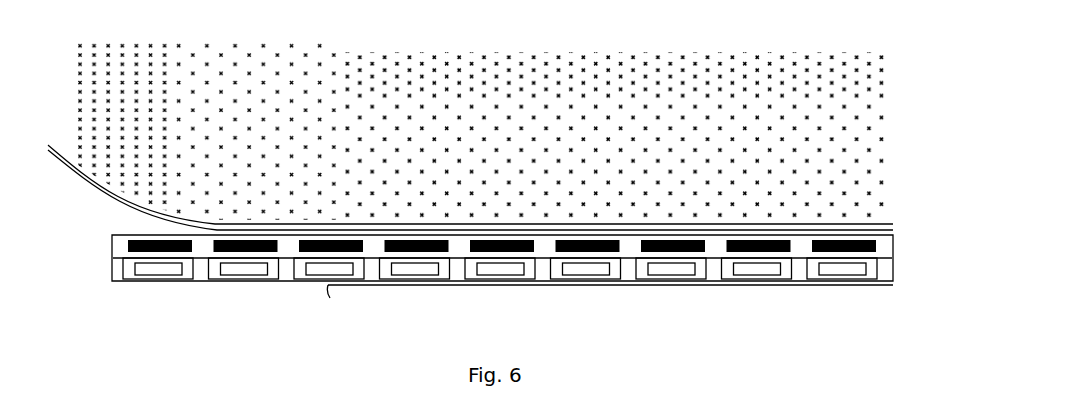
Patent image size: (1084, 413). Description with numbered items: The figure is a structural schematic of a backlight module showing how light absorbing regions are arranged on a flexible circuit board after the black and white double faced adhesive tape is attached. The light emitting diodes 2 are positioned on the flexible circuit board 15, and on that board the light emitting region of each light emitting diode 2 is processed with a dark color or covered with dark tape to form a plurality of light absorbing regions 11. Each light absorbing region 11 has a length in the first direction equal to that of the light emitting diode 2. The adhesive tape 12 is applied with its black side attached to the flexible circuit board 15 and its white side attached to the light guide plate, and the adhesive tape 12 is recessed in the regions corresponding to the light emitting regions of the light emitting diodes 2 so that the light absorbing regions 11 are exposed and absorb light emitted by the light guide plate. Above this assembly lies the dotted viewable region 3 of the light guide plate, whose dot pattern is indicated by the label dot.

The light emitting diode 2 is at (417, 268).
The viewable region 3 is at (500, 136).
The light absorbing region 11 is at (515, 247).
The adhesive tape 12 is at (462, 247).
The flexible circuit board 15 is at (288, 293).
The light guide dots dot is at (853, 108).